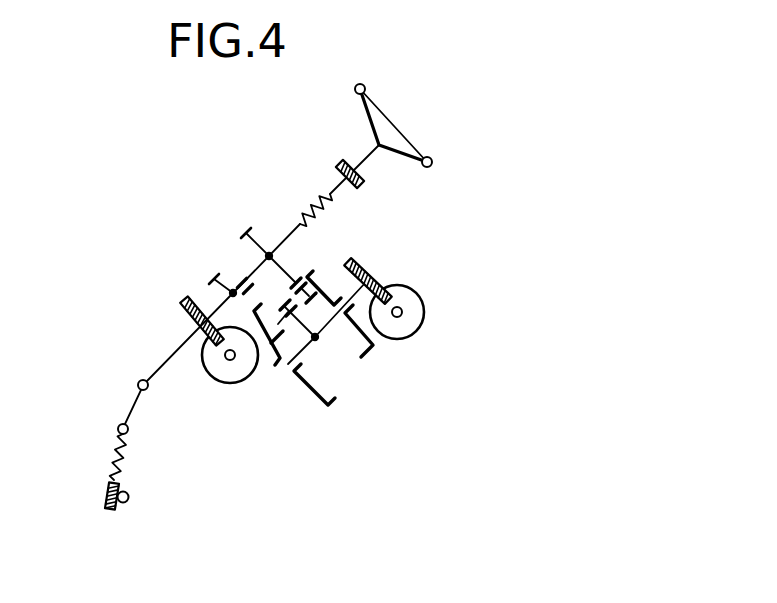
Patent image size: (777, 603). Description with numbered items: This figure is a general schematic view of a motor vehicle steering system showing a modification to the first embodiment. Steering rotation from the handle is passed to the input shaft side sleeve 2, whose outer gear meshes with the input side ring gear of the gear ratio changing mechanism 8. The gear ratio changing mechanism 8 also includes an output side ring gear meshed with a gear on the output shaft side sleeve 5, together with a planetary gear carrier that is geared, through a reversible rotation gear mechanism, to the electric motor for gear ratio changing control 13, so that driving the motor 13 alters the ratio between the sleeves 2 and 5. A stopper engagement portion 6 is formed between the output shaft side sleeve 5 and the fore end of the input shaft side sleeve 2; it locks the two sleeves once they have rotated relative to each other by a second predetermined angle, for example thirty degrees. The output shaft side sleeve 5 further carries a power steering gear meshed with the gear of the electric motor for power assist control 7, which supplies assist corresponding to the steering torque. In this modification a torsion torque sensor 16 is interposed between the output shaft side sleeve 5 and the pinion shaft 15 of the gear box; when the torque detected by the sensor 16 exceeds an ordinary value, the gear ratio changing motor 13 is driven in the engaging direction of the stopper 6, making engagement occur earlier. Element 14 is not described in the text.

The input shaft side sleeve 2 is at (284, 241).
The output shaft side sleeve 5 is at (155, 375).
The stopper engagement portion 6 is at (233, 281).
The electric motor for power assist control 7 is at (243, 383).
The gear ratio changing mechanism 8 is at (305, 389).
The electric motor for gear ratio changing control 13 is at (427, 315).
The spring 14 is at (332, 198).
The pinion shaft 15 is at (134, 499).
The torsion torque sensor 16 is at (109, 446).